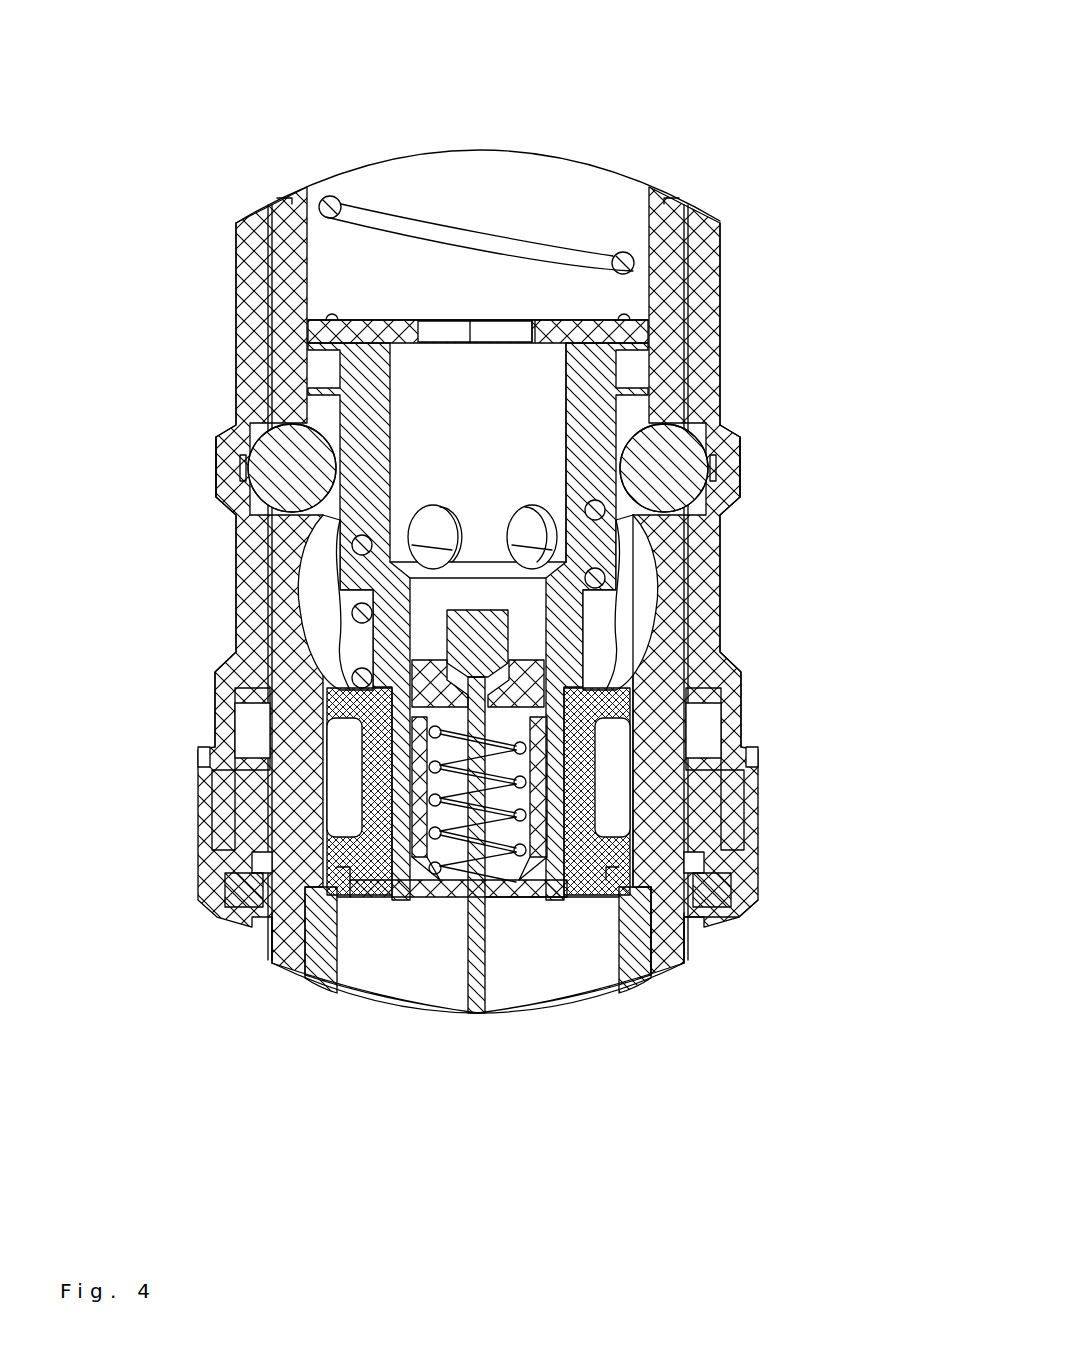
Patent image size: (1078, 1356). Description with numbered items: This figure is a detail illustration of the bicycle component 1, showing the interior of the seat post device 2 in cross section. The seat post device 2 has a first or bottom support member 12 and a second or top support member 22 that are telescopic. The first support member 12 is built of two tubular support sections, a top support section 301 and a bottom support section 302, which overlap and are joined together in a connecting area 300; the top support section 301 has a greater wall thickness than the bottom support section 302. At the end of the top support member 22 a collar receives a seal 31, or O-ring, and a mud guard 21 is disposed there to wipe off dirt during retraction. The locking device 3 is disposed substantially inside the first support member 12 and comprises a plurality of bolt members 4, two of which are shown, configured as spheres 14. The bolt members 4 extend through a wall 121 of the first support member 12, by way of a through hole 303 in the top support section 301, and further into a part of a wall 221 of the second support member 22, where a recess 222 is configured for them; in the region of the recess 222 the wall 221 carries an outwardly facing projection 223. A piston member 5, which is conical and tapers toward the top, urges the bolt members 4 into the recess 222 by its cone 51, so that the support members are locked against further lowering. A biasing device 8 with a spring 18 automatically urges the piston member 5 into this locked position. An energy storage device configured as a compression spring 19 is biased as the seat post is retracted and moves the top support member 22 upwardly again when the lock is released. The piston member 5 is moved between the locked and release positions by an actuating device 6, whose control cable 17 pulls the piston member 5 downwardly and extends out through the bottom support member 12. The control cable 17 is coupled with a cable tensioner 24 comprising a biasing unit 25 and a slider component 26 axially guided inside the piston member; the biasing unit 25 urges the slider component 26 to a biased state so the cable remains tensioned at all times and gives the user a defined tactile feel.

The bicycle component 1 is at (97, 42).
The seat post device 2 is at (127, 124).
The locking device 3 is at (782, 236).
The bolt members 4 is at (707, 451).
The piston member 5 is at (373, 310).
The actuating device 6 is at (547, 953).
The biasing device 8 is at (612, 583).
The first support member 12 is at (263, 955).
The spheres 14 is at (694, 476).
The control cable 17 is at (473, 1002).
The spring 18 is at (633, 647).
The spring 19 is at (634, 263).
The mud guard 21 is at (705, 897).
The second support member 22 is at (235, 283).
The cable tensioner 24 is at (433, 640).
The biasing unit 25 is at (510, 848).
The slider component 26 is at (425, 677).
The seal 31 is at (255, 800).
The cone 51 is at (583, 440).
The wall 121 is at (297, 545).
The wall 221 is at (255, 333).
The recess 222 is at (232, 437).
The projection 223 is at (214, 452).
The connecting area 300 is at (265, 938).
The top support section 301 is at (670, 937).
The bottom support section 302 is at (633, 952).
The through hole 303 is at (283, 523).